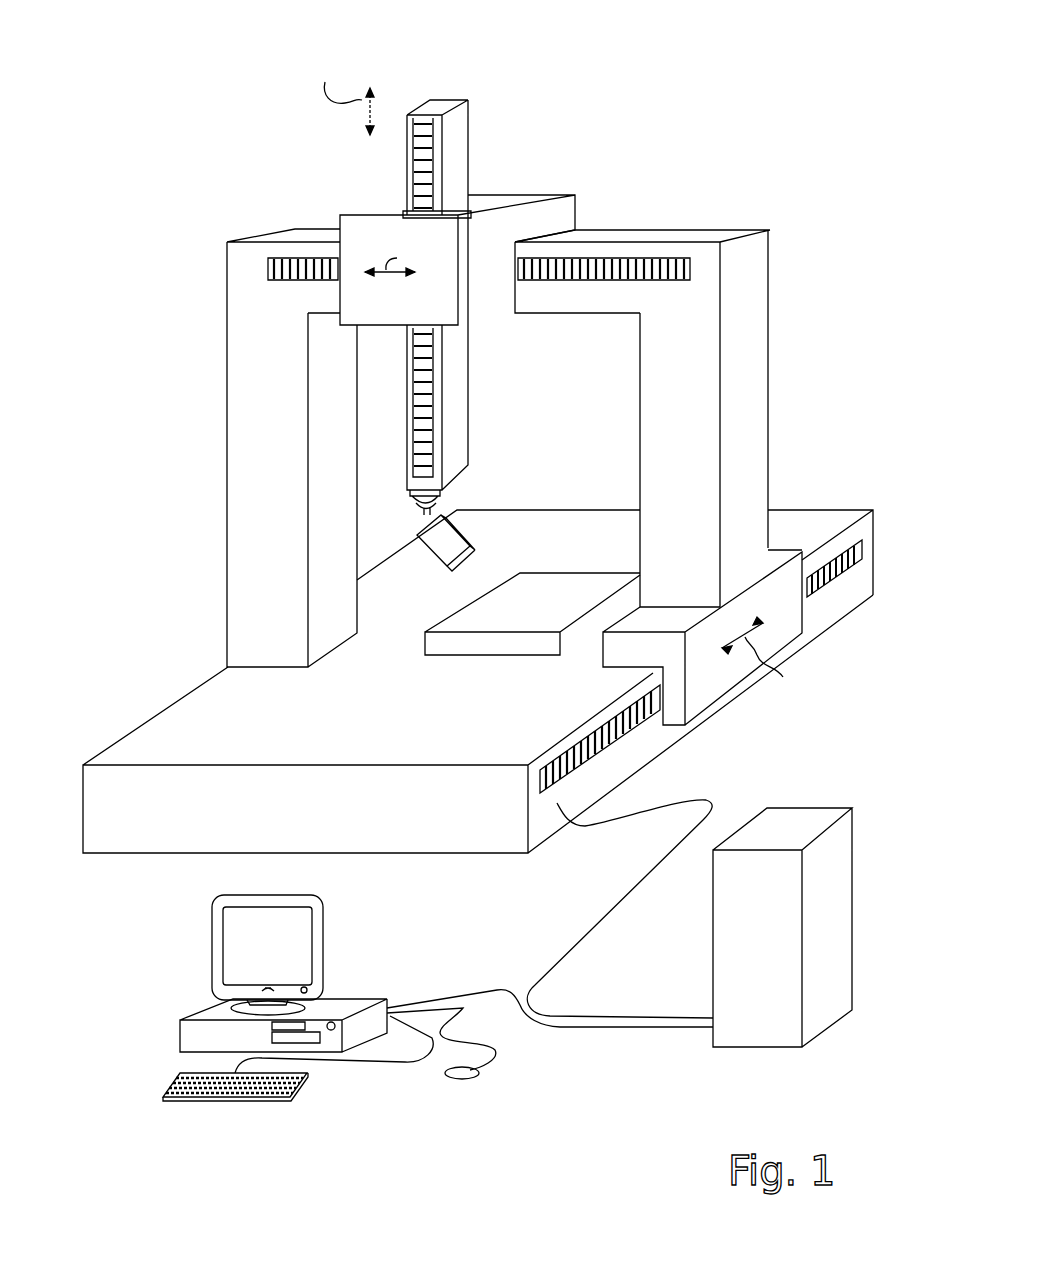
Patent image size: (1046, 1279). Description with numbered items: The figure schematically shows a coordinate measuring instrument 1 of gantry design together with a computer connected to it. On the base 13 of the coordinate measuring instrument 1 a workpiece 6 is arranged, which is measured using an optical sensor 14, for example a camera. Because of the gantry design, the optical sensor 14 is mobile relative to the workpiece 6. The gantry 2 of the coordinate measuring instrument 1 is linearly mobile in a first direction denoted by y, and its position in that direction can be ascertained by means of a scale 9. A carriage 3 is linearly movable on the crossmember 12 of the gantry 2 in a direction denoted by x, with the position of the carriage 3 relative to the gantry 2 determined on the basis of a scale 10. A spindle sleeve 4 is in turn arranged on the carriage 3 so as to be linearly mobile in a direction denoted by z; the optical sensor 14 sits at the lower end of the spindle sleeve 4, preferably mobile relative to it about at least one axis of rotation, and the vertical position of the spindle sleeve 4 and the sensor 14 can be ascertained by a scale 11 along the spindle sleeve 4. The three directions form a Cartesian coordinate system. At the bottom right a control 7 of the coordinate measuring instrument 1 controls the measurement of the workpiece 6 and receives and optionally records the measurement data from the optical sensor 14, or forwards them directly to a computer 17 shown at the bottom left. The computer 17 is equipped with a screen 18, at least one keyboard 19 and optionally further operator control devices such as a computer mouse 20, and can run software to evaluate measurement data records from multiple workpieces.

The coordinate measuring instrument 1 is at (845, 305).
The gantry 2 is at (240, 588).
The carriage 3 is at (390, 213).
The spindle sleeve 4 is at (457, 148).
The workpiece 6 is at (440, 647).
The control 7 is at (805, 830).
The scale 9 is at (850, 567).
The scale 10 is at (622, 268).
The scale 11 is at (405, 112).
The crossmember 12 is at (715, 232).
The base 13 is at (806, 522).
The optical sensor 14 is at (415, 537).
The computer 17 is at (358, 999).
The screen 18 is at (328, 930).
The keyboard 19 is at (298, 1082).
The computer mouse 20 is at (478, 1076).